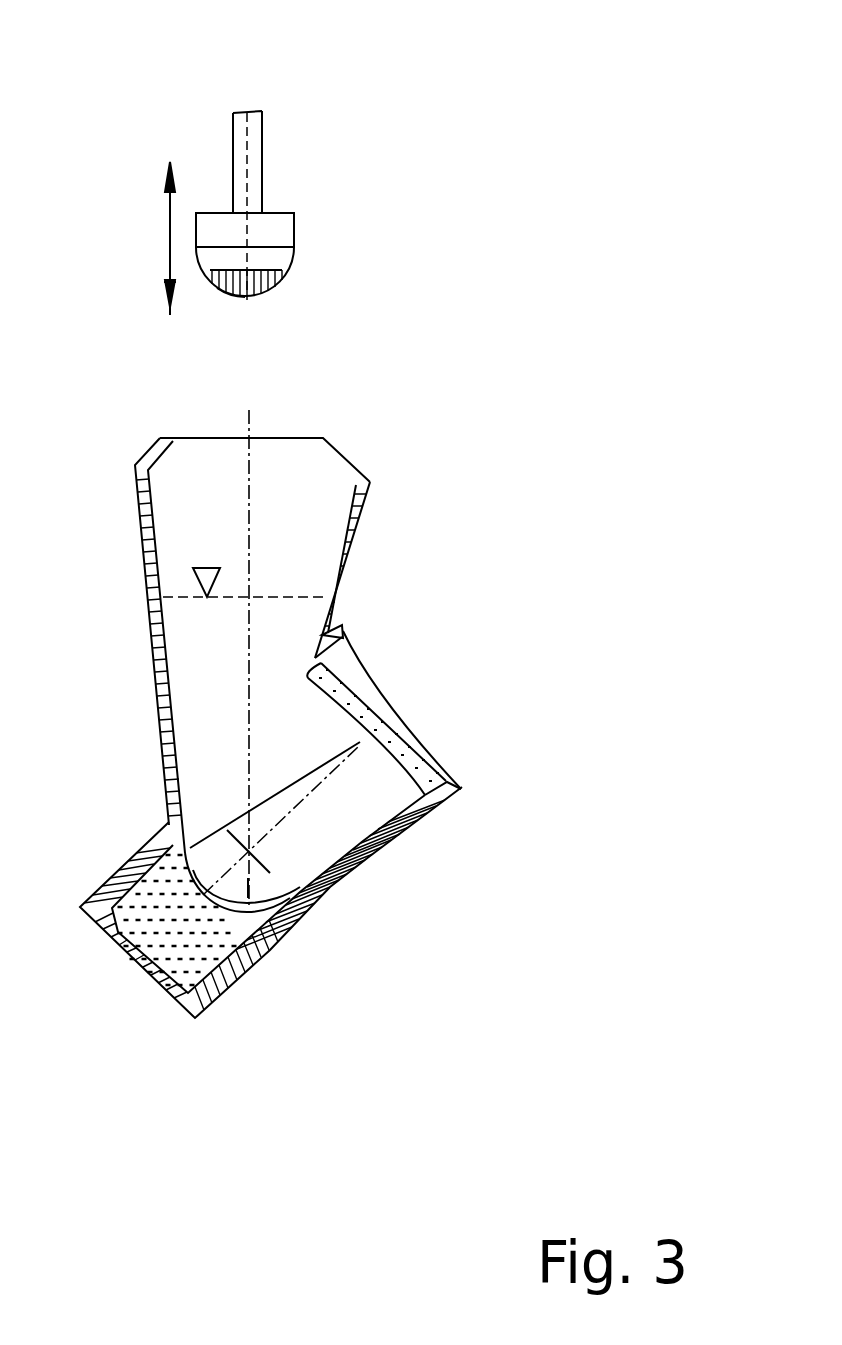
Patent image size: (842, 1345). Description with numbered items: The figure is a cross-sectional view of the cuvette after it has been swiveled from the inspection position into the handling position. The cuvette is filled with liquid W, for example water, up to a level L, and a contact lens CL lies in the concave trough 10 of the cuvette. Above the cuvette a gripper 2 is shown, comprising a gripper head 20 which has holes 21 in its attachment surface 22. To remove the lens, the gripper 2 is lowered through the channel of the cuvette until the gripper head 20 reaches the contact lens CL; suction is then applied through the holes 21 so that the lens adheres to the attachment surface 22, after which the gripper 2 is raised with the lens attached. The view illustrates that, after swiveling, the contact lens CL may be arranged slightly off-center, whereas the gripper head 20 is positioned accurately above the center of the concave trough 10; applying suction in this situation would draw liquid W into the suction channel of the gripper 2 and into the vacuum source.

The gripper 2 is at (339, 206).
The gripper head 20 is at (280, 228).
The holes 21 is at (267, 297).
The attachment surface 22 is at (227, 293).
The liquid W is at (200, 692).
The level L is at (207, 567).
The concave trough 10 is at (258, 920).
The contact lens CL is at (248, 918).